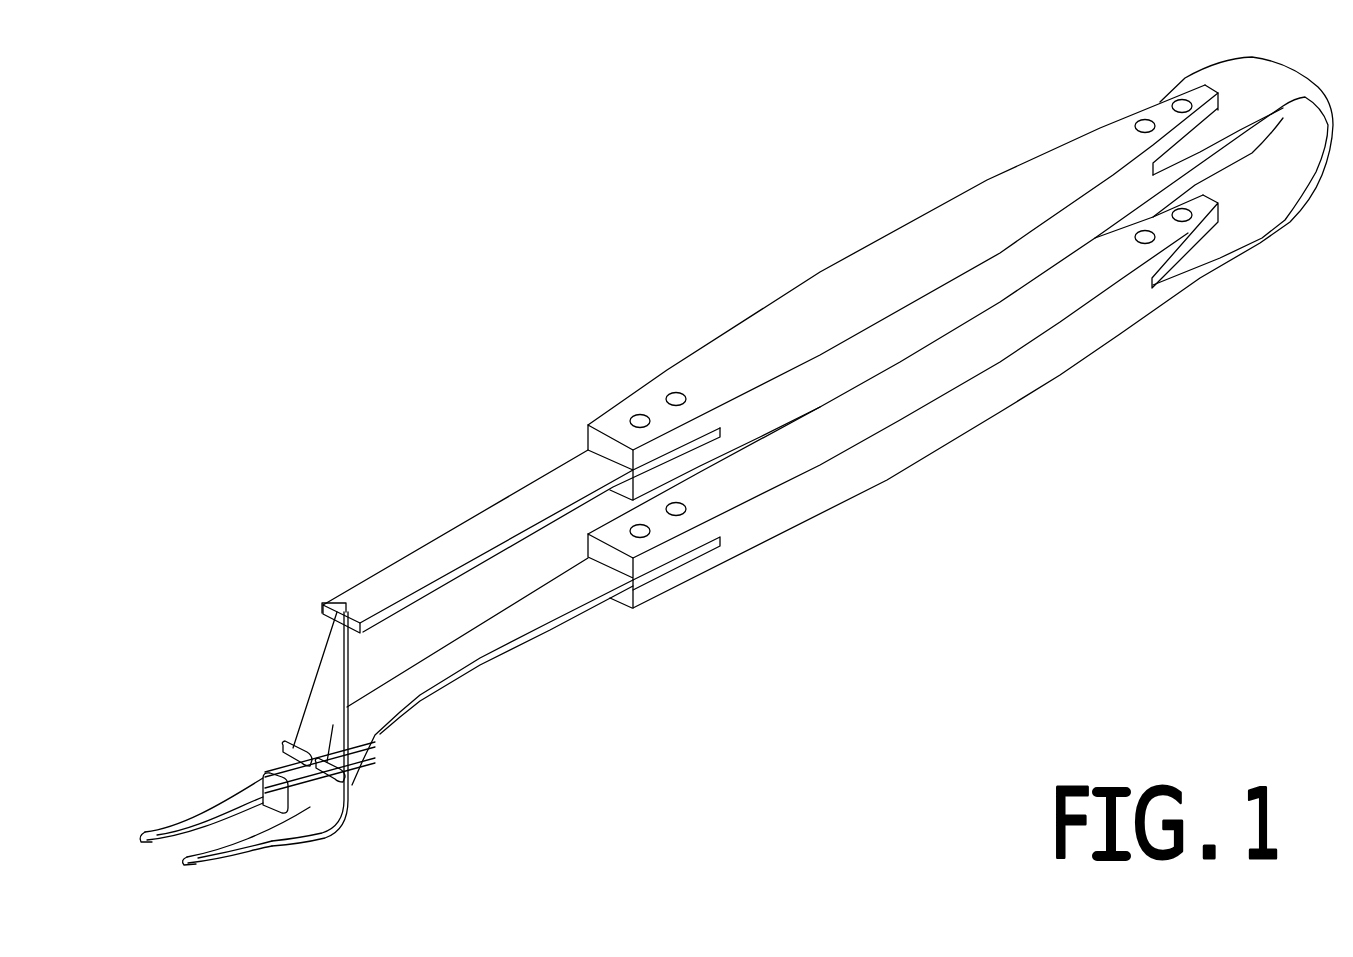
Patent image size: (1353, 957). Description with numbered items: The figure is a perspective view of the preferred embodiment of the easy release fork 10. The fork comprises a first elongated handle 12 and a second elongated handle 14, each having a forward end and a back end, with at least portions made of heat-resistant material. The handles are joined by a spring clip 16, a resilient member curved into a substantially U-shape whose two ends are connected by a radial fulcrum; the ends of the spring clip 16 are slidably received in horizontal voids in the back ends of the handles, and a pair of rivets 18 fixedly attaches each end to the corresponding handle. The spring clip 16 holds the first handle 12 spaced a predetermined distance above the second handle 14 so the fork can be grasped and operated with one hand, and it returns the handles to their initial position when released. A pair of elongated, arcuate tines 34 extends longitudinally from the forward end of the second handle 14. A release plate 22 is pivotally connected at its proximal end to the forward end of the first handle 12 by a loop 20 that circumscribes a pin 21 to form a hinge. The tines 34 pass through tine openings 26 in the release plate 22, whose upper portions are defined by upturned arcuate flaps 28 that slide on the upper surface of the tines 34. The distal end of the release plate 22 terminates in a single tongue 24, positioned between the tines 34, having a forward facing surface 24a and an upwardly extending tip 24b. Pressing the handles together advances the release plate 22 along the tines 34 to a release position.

The easy release fork 10 is at (422, 220).
The first elongated handle 12 is at (882, 260).
The second elongated handle 14 is at (898, 438).
The spring clip 16 is at (1267, 189).
The rivets 18 is at (1181, 103).
The loop 20 is at (330, 603).
The pin 21 is at (360, 628).
The release plate 22 is at (322, 690).
The tongue 24 is at (280, 817).
The forward facing surface 24a is at (263, 797).
The upwardly extending tip 24b is at (327, 805).
The tine openings 26 is at (288, 752).
The upturned arcuate flaps 28 is at (310, 750).
The tines 34 is at (190, 856).